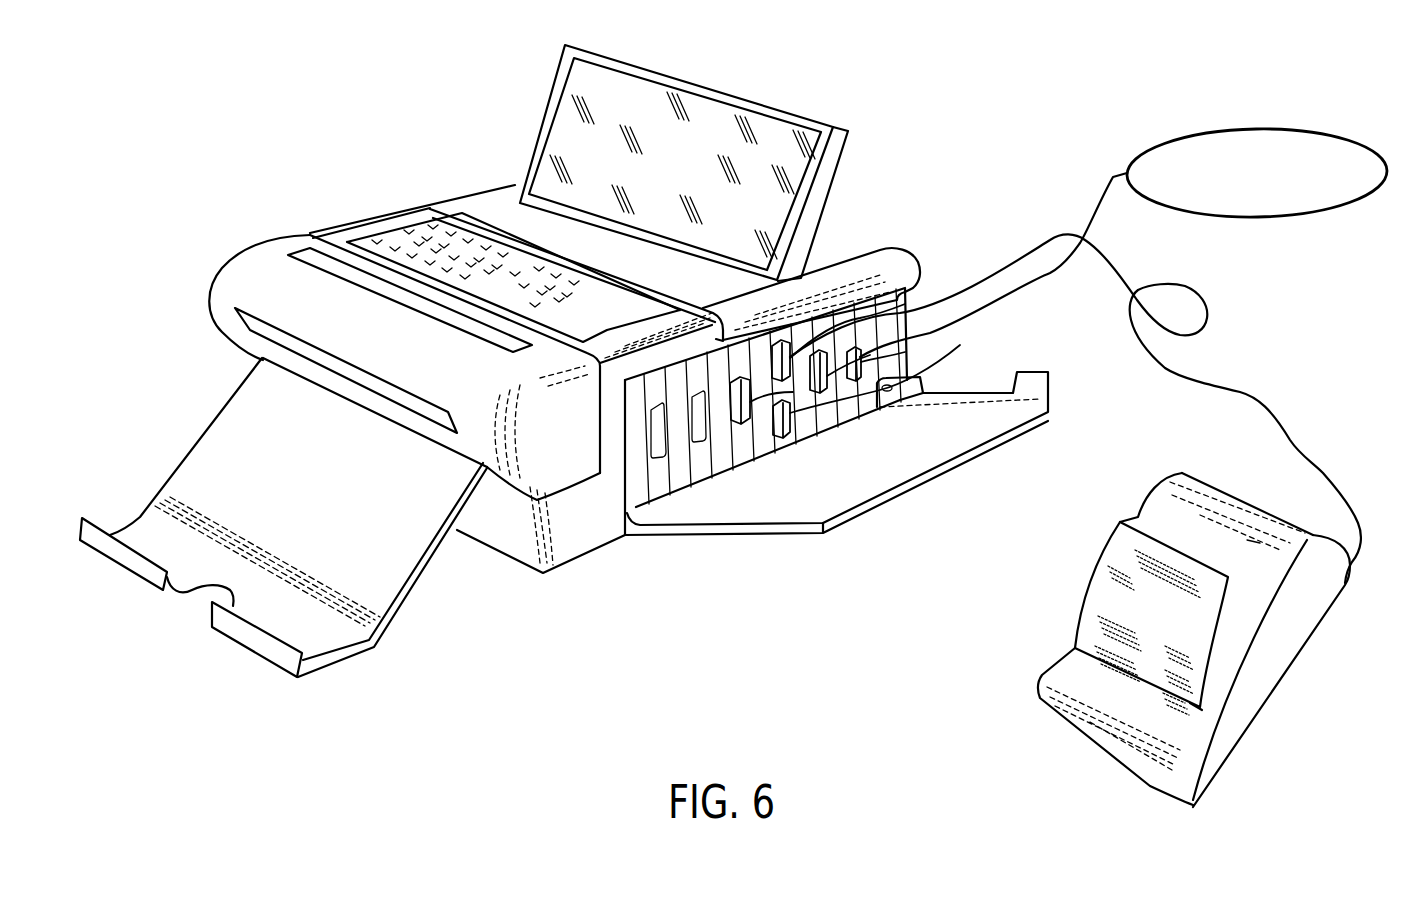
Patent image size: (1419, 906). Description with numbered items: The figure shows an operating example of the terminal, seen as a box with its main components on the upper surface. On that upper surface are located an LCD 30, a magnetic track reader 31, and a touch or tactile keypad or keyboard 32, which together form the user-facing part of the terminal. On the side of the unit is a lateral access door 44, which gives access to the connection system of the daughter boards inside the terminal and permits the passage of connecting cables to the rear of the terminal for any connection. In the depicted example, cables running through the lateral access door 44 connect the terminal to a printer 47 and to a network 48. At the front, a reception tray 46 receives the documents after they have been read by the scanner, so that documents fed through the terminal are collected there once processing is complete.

The LCD 30 is at (767, 130).
The magnetic track reader 31 is at (430, 208).
The touch or tactile keypad or keyboard 32 is at (403, 240).
The lateral access door 44 is at (744, 513).
The reception tray 46 is at (263, 617).
The printer 47 is at (1070, 660).
The network 48 is at (1297, 152).